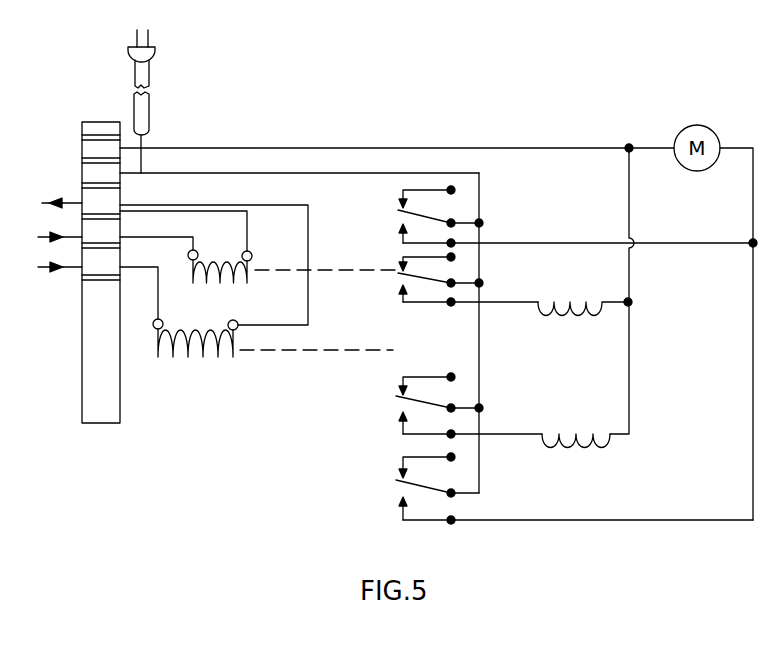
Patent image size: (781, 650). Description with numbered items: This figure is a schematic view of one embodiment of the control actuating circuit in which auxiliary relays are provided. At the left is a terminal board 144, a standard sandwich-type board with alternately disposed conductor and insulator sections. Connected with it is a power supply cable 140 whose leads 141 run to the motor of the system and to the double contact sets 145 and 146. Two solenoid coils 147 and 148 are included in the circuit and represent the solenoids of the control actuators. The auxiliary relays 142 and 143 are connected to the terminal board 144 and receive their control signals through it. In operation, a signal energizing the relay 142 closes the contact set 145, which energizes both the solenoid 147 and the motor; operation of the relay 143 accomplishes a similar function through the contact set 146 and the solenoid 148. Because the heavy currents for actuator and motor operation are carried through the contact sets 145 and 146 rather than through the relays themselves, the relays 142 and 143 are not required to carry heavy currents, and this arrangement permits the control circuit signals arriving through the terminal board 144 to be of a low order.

The power supply cable 140 is at (150, 125).
The leads 141 is at (380, 173).
The auxiliary relay 142 is at (227, 257).
The auxiliary relay 143 is at (220, 330).
The terminal board 144 is at (90, 320).
The double contact set 145 is at (389, 218).
The double contact set 146 is at (378, 428).
The solenoid coil 147 is at (601, 289).
The solenoid coil 148 is at (604, 422).